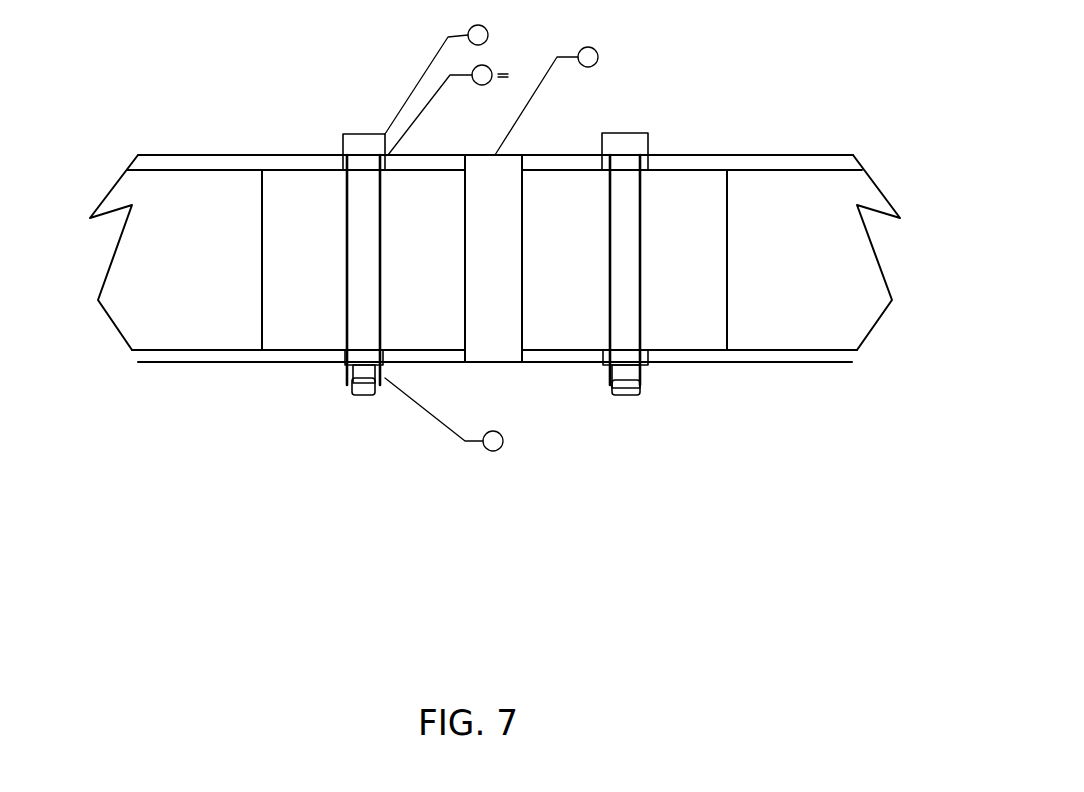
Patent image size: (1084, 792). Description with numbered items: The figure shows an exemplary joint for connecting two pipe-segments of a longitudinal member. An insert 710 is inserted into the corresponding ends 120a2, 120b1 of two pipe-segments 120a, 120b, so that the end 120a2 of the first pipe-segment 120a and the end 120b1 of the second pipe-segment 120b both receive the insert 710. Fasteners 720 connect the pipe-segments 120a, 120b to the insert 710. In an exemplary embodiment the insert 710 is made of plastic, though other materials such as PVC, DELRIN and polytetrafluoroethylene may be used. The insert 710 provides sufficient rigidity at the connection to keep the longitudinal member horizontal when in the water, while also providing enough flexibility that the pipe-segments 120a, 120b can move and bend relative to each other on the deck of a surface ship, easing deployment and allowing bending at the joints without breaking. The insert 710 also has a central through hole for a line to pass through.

The pipe-segment 120a is at (185, 307).
The end of pipe-segment 120a2 is at (430, 343).
The pipe-segment 120b is at (788, 288).
The end of pipe-segment 120b1 is at (562, 355).
The insert 710 is at (505, 343).
The fastener 720 is at (623, 136).